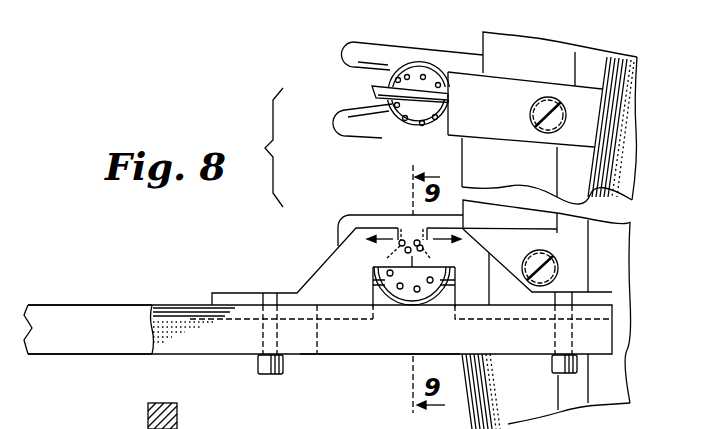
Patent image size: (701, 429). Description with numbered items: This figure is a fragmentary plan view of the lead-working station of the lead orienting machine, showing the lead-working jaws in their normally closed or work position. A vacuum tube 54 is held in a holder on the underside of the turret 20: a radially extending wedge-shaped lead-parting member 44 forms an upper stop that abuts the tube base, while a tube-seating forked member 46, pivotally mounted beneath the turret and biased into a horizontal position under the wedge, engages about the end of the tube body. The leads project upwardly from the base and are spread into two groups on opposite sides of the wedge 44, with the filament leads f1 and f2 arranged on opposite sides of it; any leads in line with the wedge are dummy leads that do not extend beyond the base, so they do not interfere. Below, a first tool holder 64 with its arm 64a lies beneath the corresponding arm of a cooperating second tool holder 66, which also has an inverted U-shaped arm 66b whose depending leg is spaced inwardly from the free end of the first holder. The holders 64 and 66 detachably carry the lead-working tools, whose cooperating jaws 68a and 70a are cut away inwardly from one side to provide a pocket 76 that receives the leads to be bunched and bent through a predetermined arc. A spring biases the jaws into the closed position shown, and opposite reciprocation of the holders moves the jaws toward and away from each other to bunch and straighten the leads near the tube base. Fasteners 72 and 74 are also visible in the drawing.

The turret 20 is at (562, 55).
The lead-parting member 44 is at (395, 91).
The tube-seating forked member 46 is at (356, 66).
The vacuum tube 54 is at (412, 63).
The filament lead f1 is at (438, 117).
The filament lead f2 is at (438, 82).
The first tool holder 64 is at (97, 296).
The arm 64a is at (75, 347).
The second tool holder 66 is at (222, 362).
The inverted U-shaped arm 66b is at (382, 350).
The jaw 68a is at (382, 228).
The jaw 70a is at (443, 237).
The bolt 72 is at (281, 375).
The bolt 74 is at (556, 376).
The pocket 76 is at (408, 237).